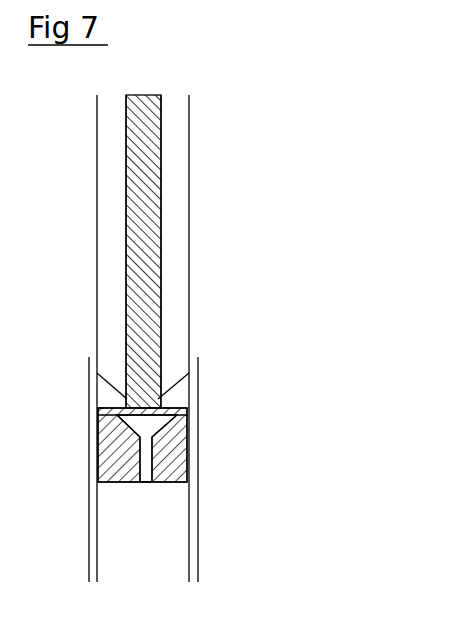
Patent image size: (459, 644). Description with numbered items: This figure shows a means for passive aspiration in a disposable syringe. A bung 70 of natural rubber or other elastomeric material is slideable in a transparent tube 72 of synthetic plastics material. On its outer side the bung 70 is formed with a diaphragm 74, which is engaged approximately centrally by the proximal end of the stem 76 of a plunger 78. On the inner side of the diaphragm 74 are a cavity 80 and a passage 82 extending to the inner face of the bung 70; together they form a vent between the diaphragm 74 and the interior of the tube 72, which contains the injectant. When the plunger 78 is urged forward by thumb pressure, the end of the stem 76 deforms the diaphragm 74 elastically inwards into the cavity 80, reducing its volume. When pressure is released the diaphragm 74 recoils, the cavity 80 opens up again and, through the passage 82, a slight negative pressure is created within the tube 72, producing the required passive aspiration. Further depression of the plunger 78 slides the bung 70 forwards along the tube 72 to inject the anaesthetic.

The plunger 78 is at (207, 92).
The stem 76 is at (153, 285).
The bung 70 is at (172, 418).
The diaphragm 74 is at (124, 418).
The cavity 80 is at (182, 448).
The passage 82 is at (143, 480).
The transparent tube 72 is at (197, 558).